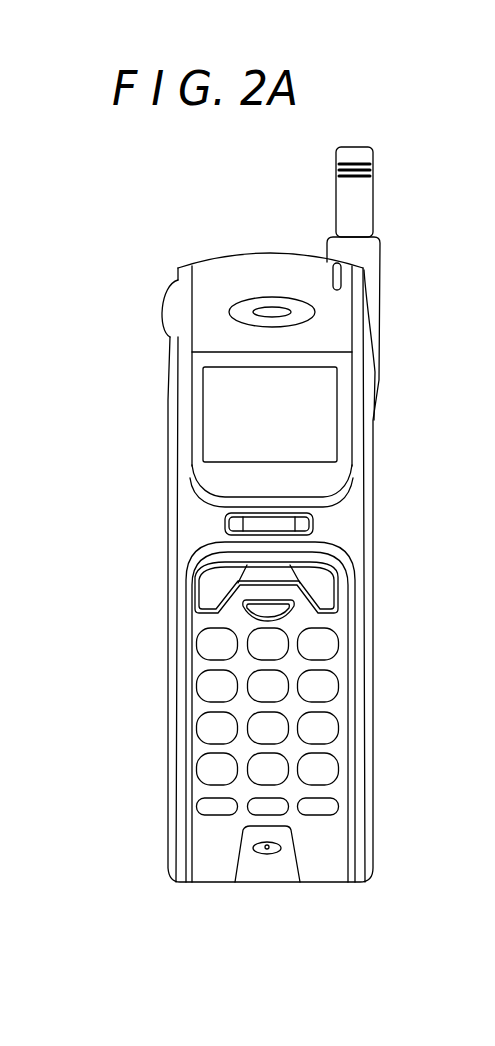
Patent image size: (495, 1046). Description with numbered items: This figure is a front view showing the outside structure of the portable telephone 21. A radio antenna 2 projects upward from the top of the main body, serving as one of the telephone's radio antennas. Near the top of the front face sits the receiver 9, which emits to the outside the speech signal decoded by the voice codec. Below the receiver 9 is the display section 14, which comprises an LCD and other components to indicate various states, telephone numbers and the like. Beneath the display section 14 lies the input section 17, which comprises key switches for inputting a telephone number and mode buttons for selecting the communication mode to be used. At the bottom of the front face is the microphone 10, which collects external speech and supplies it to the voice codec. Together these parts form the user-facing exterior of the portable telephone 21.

The portable telephone 21 is at (402, 149).
The radio antenna 2 is at (343, 193).
The receiver 9 is at (271, 312).
The display section 14 is at (220, 408).
The input section 17 is at (163, 310).
The microphone 10 is at (267, 850).